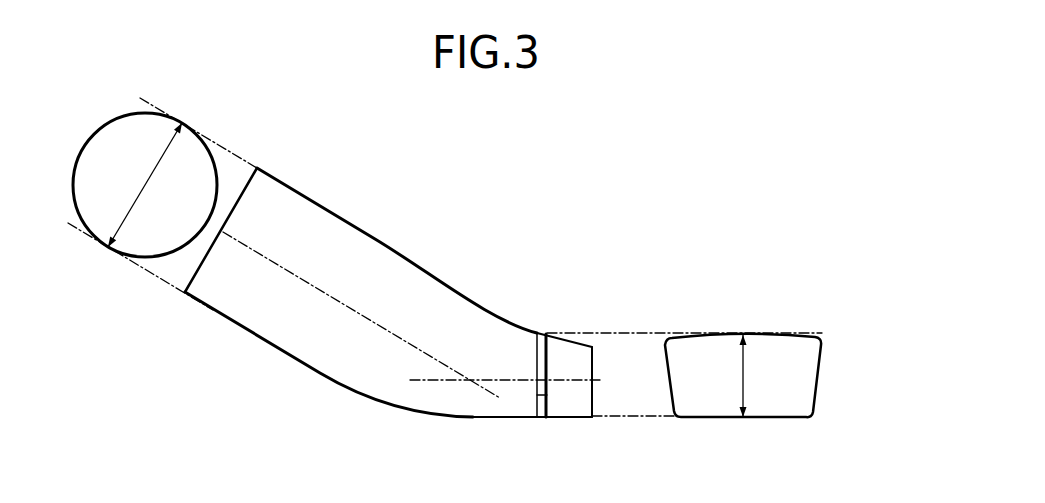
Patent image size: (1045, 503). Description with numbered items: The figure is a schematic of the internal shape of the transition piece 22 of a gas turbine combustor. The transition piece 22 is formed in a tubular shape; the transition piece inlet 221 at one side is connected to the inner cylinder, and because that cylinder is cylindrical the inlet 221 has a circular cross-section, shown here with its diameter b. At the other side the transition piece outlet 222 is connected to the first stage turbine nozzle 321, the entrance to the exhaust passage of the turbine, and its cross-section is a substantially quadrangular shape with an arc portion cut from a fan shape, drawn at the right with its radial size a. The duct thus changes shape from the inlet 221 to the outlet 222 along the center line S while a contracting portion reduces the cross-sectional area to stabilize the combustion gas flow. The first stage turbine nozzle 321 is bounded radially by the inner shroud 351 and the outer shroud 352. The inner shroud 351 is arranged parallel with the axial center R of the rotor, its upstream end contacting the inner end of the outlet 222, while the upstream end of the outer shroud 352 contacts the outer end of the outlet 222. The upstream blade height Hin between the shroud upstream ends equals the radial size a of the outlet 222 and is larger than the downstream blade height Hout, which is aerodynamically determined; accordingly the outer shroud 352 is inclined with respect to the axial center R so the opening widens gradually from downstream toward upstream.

The transition piece 22 is at (392, 240).
The transition piece inlet 221 is at (215, 172).
The transition piece outlet 222 is at (548, 395).
The first stage turbine nozzle 321 is at (582, 396).
The inner shroud 351 is at (585, 417).
The outer shroud 352 is at (583, 343).
The size of the opening provided upstream Hin is at (537, 353).
The size of the opening provided downstream Hout is at (593, 361).
The duct center axis S is at (401, 333).
The axial center of the rotor R is at (497, 378).
The size of the transition piece outlet in the radial direction a is at (745, 375).
The diameter of the transition piece inlet b is at (142, 197).